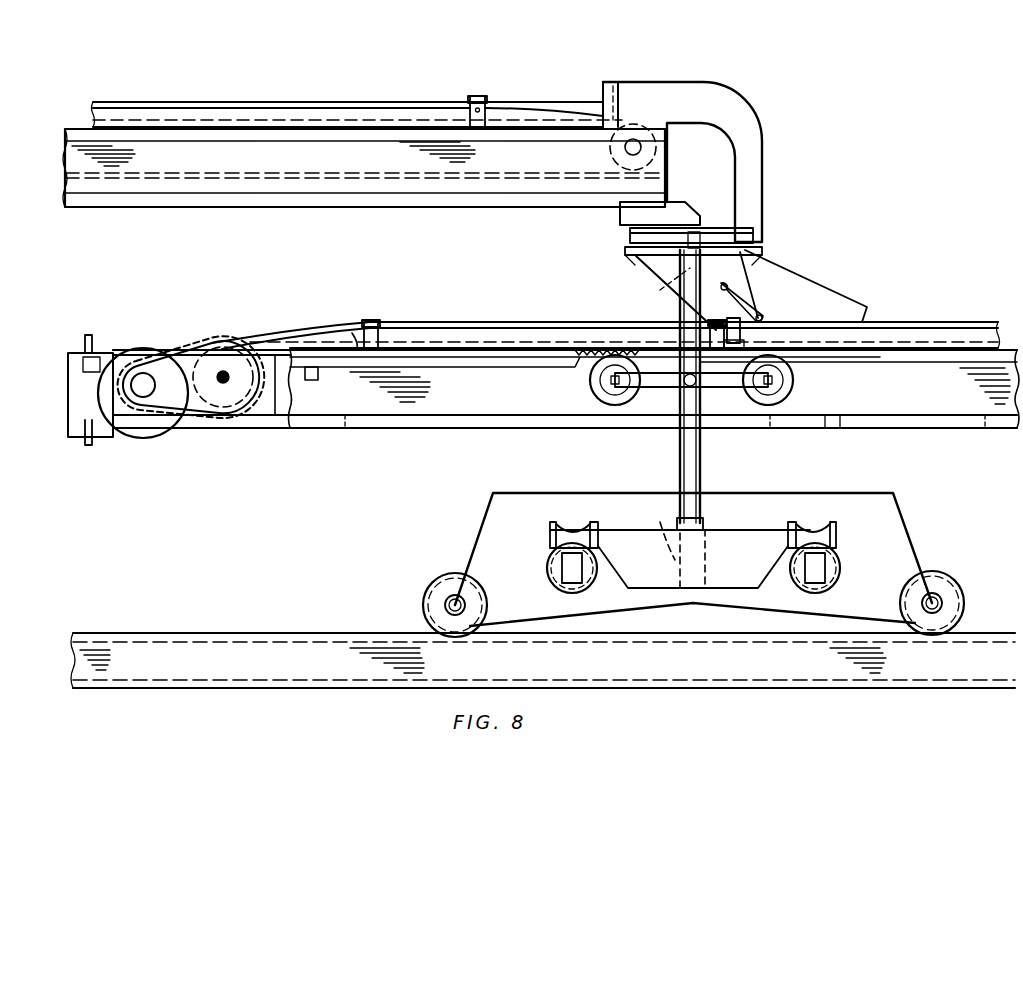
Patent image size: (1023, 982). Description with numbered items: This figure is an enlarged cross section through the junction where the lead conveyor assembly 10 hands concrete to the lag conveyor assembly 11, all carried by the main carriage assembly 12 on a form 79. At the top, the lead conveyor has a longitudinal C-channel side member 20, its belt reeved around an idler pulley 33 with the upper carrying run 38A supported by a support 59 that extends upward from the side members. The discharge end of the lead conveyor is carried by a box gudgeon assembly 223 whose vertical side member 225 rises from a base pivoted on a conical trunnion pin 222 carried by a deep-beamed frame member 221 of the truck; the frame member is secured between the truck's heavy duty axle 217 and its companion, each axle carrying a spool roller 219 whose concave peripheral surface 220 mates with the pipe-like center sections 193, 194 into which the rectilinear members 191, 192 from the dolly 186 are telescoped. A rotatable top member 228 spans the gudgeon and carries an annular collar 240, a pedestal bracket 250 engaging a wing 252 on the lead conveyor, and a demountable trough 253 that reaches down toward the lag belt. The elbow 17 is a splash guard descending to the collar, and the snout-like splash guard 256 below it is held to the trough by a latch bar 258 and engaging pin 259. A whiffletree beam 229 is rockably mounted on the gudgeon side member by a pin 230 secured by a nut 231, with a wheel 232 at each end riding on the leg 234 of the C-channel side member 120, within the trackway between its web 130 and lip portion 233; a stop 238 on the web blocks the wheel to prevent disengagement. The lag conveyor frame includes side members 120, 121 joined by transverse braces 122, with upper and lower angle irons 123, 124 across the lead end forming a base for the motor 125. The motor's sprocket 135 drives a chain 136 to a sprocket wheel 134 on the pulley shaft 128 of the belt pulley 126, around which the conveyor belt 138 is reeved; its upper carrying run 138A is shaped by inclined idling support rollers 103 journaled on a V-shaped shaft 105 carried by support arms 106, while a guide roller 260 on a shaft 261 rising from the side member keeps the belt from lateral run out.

The lead conveyor assembly 10 is at (374, 94).
The upper carrying run of belt 38A is at (199, 108).
The support 59 is at (485, 103).
The elbow 17 is at (757, 138).
The longitudinal C-channel structural side member 20 is at (228, 172).
The idler pulley 33 is at (612, 155).
The wing 252 is at (634, 218).
The pedestal bracket 250 is at (752, 234).
The engaging pin 259 is at (758, 258).
The latch bar 258 is at (786, 288).
The snout-like splash guard 256 is at (838, 300).
The annular collar 240 is at (640, 251).
The top member 228 is at (668, 280).
The trough 253 is at (668, 290).
The support arm 106 is at (711, 330).
The guide roller 260 is at (746, 321).
The shaft 261 is at (746, 344).
The lag conveyor assembly 11 is at (951, 318).
The motor 125 is at (136, 350).
The chain 136 is at (173, 358).
The V-shaped shaft 105 is at (376, 326).
The idling support roller 103 is at (382, 336).
The upper carrying run of belt 138A is at (490, 330).
The upper angle iron 123 is at (87, 342).
The stop 238 is at (308, 380).
The leg 234 is at (580, 358).
The wheel 232 is at (601, 383).
The nut 231 is at (669, 388).
The lip portion 233 is at (928, 352).
The lower angle iron 124 is at (87, 440).
The sprocket 135 is at (148, 398).
The sprocket wheel 134 is at (183, 406).
The pulley shaft 128 is at (222, 384).
The belt pulley 126 is at (226, 422).
The longitudinal C-channel structural side member 121 is at (257, 420).
The conveyor belt 138 is at (286, 420).
The transverse brace 122 is at (340, 432).
The web 130 is at (438, 395).
The longitudinal C-channel structural side member 120 is at (522, 424).
The pin 230 is at (687, 396).
The box gudgeon assembly 223 is at (708, 452).
The whiffletree beam 229 is at (746, 386).
The vertical side member 225 is at (700, 474).
The conical trunnion pin 222 is at (700, 516).
The main carriage assembly 12 is at (876, 488).
The concave peripheral surface 220 is at (574, 526).
The spool roller 219 is at (550, 530).
The deep-beamed frame member 221 is at (660, 535).
The dolly 186 is at (905, 540).
The rectilinear structural member 192 is at (553, 559).
The pipe-like center section 194 is at (548, 572).
The heavy duty axle 217 is at (680, 559).
The rectilinear structural member 191 is at (838, 565).
The pipe-like center section 193 is at (838, 577).
The form 79 is at (543, 660).